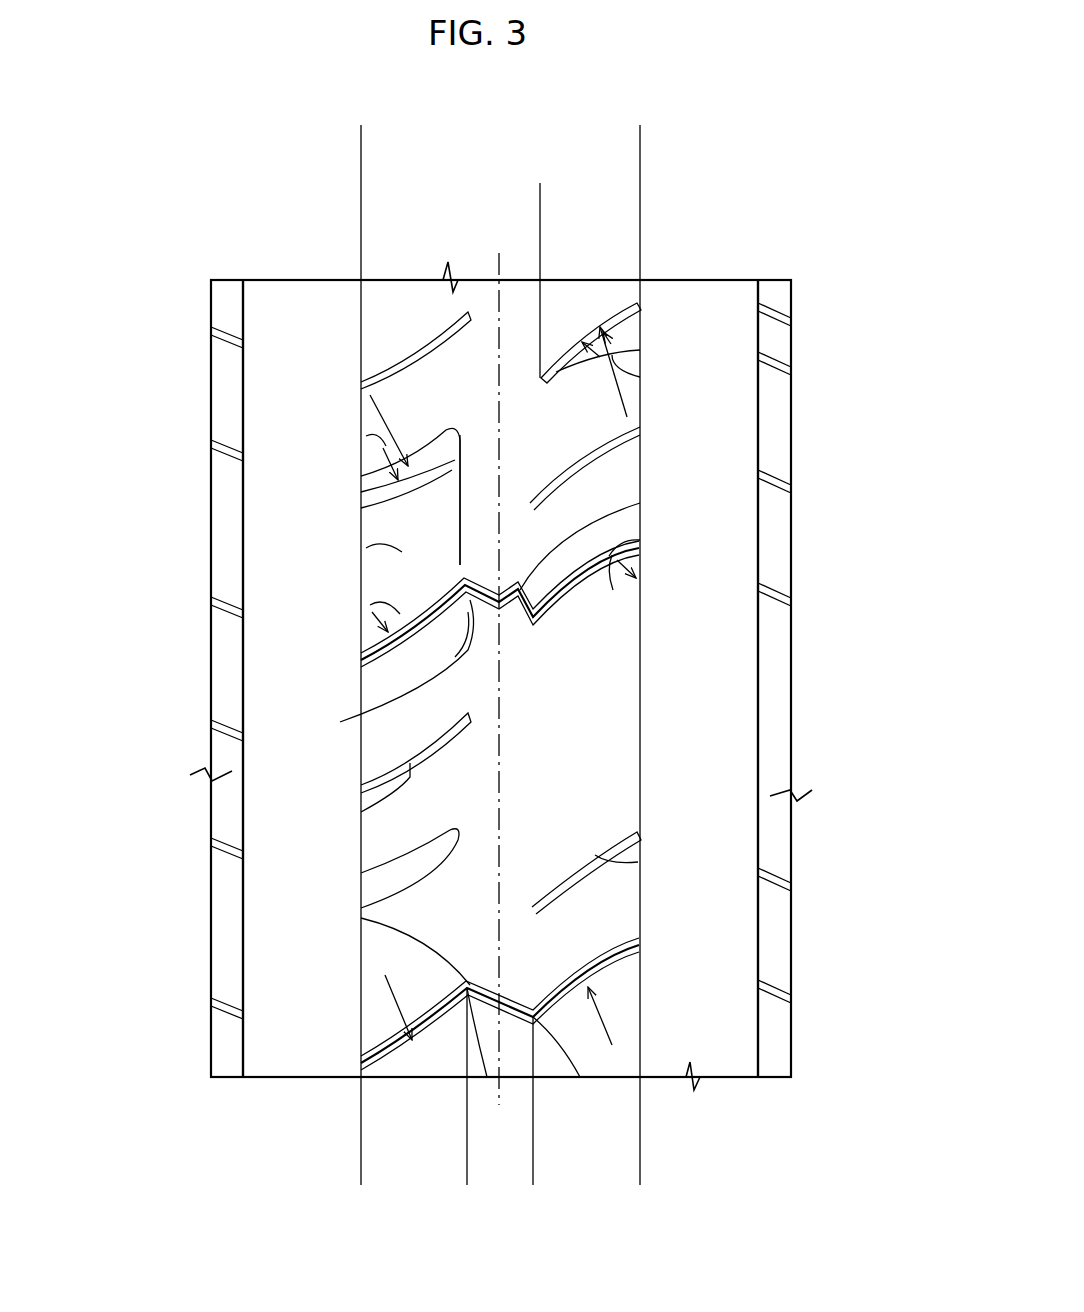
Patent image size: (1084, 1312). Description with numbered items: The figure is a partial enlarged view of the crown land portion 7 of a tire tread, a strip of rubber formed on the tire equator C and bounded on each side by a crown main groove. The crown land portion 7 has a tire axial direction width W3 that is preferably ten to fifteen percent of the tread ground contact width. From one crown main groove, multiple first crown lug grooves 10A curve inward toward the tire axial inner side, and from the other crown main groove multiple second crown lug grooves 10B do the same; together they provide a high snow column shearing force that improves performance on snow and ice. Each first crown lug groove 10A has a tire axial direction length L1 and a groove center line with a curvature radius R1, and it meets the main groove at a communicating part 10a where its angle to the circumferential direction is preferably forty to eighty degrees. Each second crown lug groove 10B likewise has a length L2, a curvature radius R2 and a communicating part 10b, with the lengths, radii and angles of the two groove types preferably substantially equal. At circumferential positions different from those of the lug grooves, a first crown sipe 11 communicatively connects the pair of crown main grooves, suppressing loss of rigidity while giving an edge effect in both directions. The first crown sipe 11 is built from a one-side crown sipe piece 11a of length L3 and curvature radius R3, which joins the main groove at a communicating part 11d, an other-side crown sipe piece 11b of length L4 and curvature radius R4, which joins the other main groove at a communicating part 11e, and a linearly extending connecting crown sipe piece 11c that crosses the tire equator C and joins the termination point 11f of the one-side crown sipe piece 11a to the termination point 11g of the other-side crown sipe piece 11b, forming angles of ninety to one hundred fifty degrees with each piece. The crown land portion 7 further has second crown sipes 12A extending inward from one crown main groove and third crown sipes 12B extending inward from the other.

The crown land portion 7 is at (400, 282).
The tire equator C is at (498, 666).
The tire axial direction width of the crown land portion W3 is at (640, 133).
The tire axial direction length of the first crown lug groove L1 is at (460, 560).
The tire axial direction length of the second crown lug groove L2 is at (640, 189).
The tire axial direction length of the one-side crown sipe piece L3 is at (466, 1179).
The tire axial direction length of the other-side crown sipe piece L4 is at (639, 1179).
The first crown lug groove 10A is at (375, 552).
The communicating part 10a is at (365, 506).
The second crown lug groove 10B is at (627, 315).
The communicating part 10b is at (573, 343).
The first crown sipe 11 is at (100, 866).
The one-side crown sipe piece 11a is at (435, 1000).
The other-side crown sipe piece 11b is at (361, 873).
The connecting crown sipe piece 11c is at (597, 955).
The communicating part 11d is at (361, 664).
The communicating part 11e is at (640, 540).
The termination point 11f is at (480, 1080).
The termination point 11g is at (580, 1080).
The second crown sipe 12A is at (361, 812).
The third crown sipe 12B is at (638, 862).
The curvature radius of the first crown lug groove R1 is at (405, 468).
The curvature radius of the second crown lug groove R2 is at (640, 403).
The curvature radius of the one-side crown sipe piece R3 is at (385, 1040).
The curvature radius of the other-side crown sipe piece R4 is at (580, 1077).